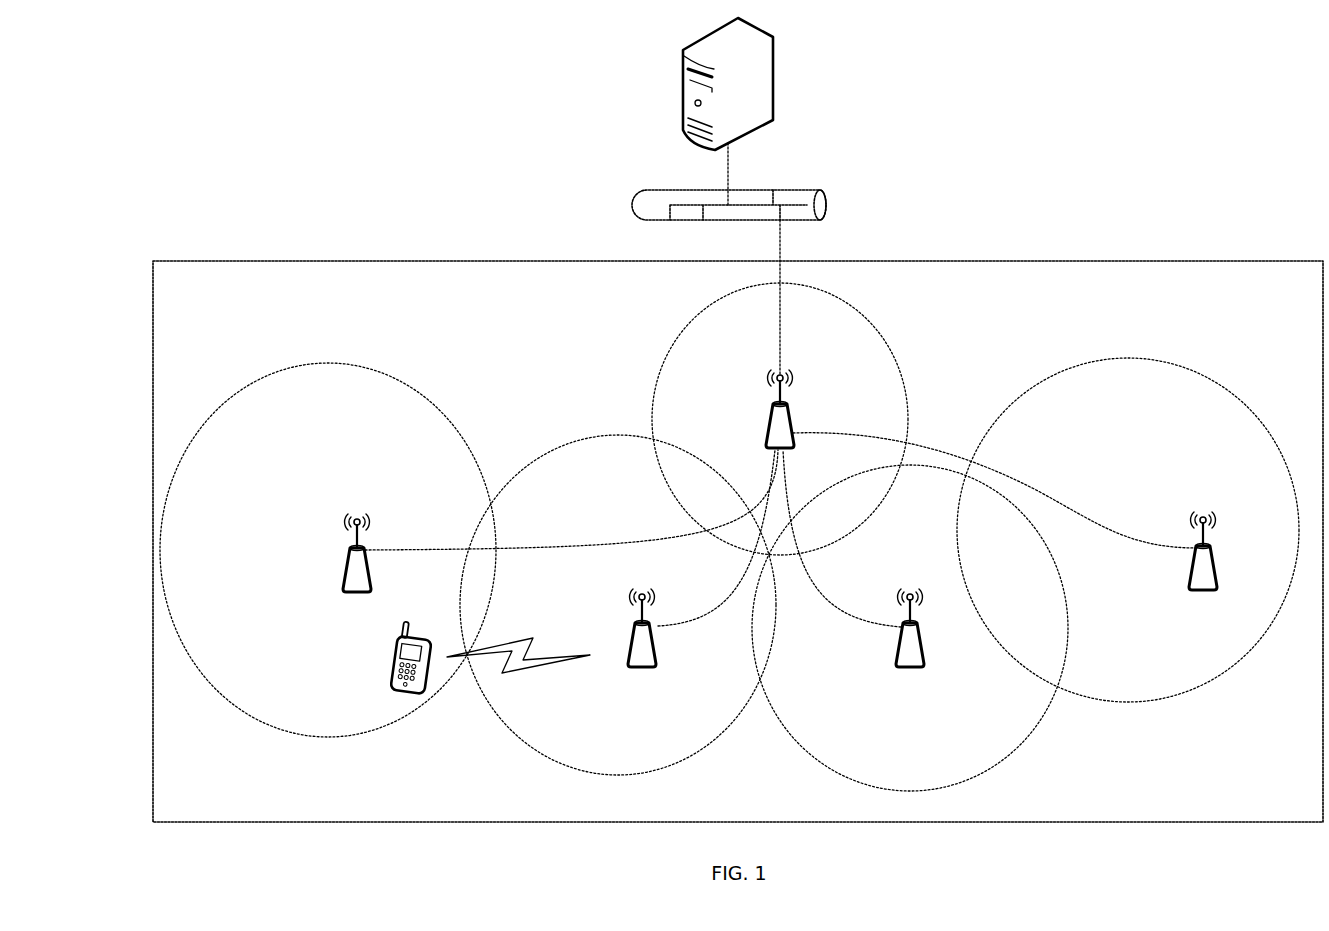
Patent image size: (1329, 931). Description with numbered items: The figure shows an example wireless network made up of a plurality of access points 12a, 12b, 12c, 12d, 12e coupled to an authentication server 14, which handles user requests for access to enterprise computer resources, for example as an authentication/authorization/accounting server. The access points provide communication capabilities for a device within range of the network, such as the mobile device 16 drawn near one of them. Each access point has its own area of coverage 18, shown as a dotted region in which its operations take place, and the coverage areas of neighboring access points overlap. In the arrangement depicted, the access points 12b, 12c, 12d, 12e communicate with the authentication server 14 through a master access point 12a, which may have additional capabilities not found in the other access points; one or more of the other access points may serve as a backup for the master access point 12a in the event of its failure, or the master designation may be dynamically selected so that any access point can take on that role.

The authentication server 14 is at (788, 77).
The area of coverage 18 is at (412, 387).
The master access point 12a is at (788, 407).
The access point 12b is at (373, 515).
The access point 12c is at (635, 623).
The access point 12d is at (920, 635).
The access point 12e is at (1218, 513).
The mobile device 16 is at (425, 690).